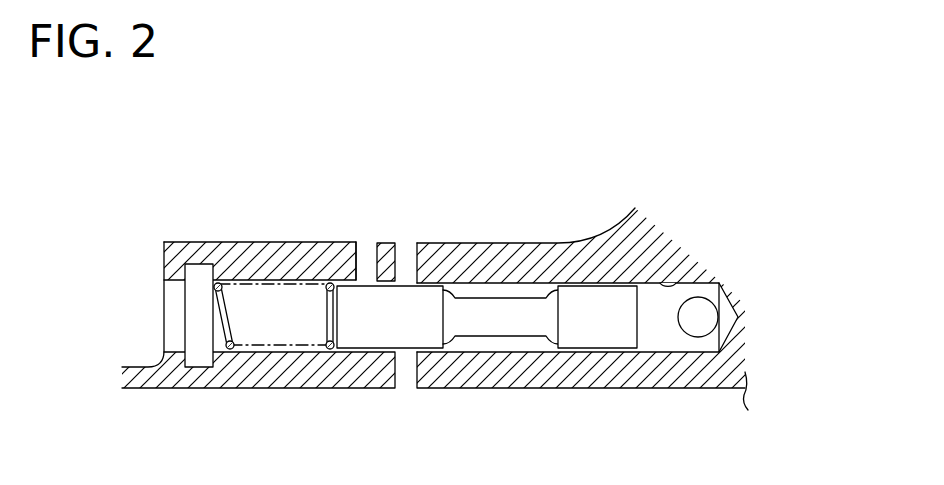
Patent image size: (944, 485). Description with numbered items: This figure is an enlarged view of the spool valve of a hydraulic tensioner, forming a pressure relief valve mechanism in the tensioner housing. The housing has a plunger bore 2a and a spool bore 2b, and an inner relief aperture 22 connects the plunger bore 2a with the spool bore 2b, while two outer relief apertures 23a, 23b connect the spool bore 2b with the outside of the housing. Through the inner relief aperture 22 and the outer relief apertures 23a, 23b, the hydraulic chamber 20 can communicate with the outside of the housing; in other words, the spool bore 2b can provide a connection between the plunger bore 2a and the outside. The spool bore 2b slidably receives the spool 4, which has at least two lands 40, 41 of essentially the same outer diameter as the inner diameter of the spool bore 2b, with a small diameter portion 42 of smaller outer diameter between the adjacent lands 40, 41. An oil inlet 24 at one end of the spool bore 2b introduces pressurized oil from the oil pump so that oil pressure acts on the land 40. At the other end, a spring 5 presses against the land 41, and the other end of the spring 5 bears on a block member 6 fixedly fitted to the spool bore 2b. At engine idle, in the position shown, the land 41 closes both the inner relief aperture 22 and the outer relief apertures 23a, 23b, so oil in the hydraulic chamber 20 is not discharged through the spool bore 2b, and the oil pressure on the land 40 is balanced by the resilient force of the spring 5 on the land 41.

The hydraulic chamber 20 is at (435, 313).
The plunger bore 2a is at (292, 388).
The spool bore 2b is at (676, 285).
The spool 4 is at (579, 283).
The spring 5 is at (230, 351).
The block member 6 is at (193, 362).
The inner relief aperture 22 is at (410, 388).
The outer relief aperture 23a is at (411, 242).
The outer relief aperture 23b is at (362, 242).
The oil inlet 24 is at (718, 314).
The land 40 is at (600, 343).
The land 41 is at (362, 338).
The small diameter portion 42 is at (503, 328).